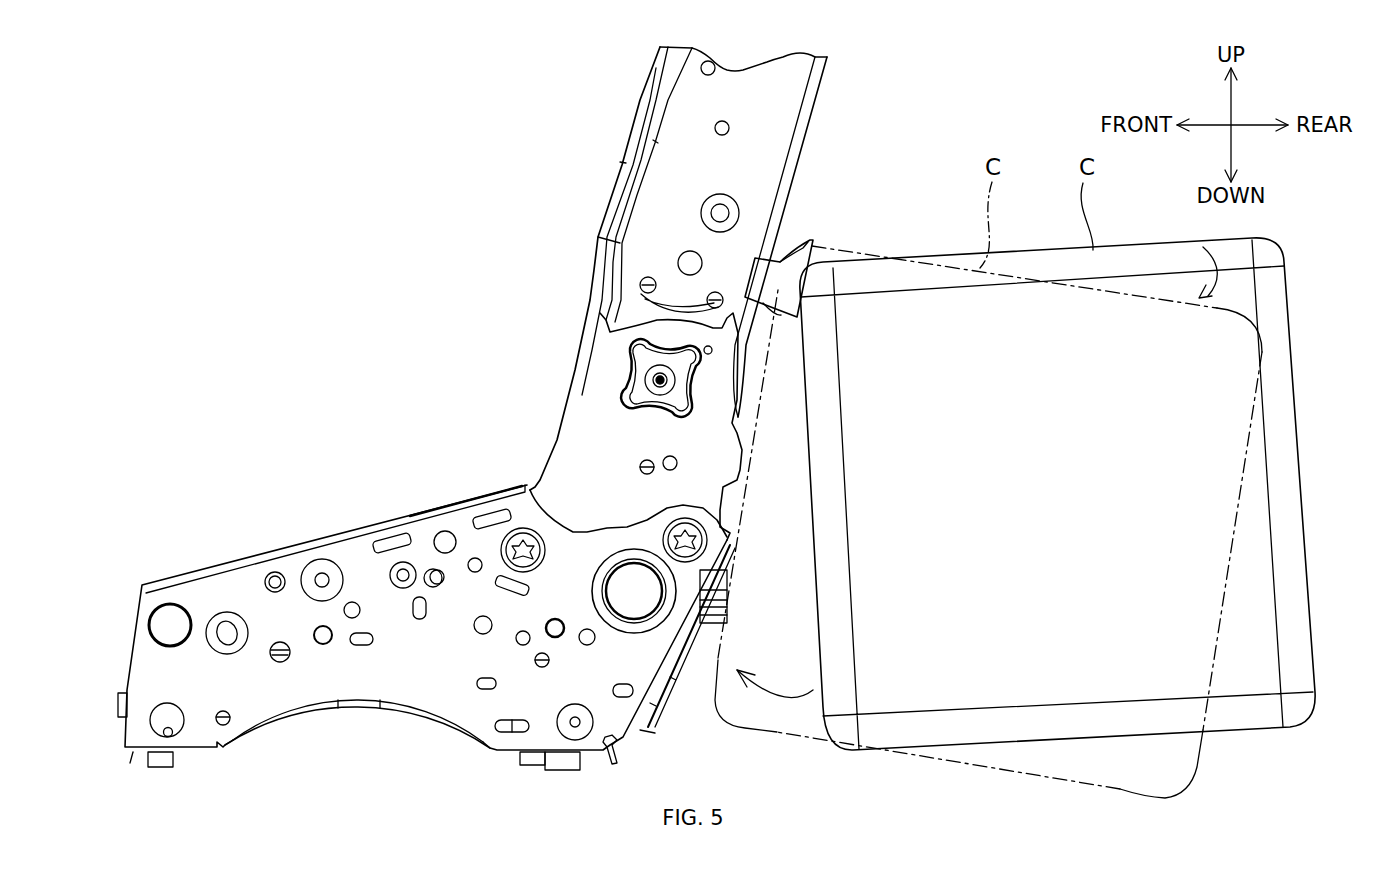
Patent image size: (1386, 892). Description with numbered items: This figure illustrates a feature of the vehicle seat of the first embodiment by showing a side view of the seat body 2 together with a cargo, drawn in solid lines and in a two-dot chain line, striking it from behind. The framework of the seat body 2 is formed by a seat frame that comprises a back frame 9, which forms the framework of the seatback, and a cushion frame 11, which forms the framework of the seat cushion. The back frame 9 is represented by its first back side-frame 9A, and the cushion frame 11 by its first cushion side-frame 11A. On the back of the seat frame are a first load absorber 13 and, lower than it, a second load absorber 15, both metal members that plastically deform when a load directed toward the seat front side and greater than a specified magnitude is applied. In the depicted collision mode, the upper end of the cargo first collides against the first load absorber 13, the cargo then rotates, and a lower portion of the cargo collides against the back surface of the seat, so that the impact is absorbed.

The seat body 2 is at (491, 272).
The back frame 9 is at (641, 157).
The first back side-frame 9A is at (787, 107).
The cushion frame 11 is at (292, 542).
The first cushion side-frame 11A is at (380, 523).
The first load absorber 13 is at (787, 230).
The second load absorber 15 is at (705, 620).